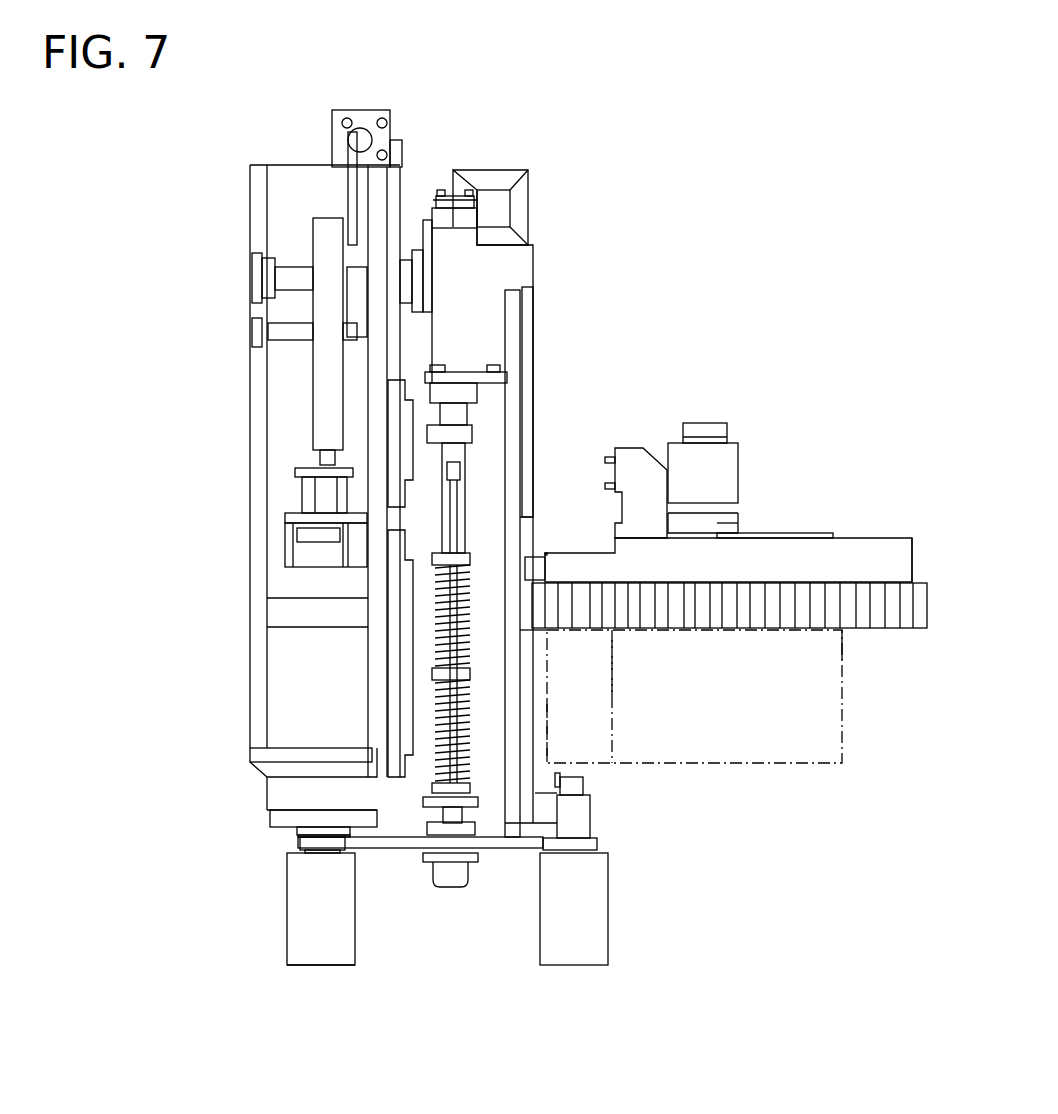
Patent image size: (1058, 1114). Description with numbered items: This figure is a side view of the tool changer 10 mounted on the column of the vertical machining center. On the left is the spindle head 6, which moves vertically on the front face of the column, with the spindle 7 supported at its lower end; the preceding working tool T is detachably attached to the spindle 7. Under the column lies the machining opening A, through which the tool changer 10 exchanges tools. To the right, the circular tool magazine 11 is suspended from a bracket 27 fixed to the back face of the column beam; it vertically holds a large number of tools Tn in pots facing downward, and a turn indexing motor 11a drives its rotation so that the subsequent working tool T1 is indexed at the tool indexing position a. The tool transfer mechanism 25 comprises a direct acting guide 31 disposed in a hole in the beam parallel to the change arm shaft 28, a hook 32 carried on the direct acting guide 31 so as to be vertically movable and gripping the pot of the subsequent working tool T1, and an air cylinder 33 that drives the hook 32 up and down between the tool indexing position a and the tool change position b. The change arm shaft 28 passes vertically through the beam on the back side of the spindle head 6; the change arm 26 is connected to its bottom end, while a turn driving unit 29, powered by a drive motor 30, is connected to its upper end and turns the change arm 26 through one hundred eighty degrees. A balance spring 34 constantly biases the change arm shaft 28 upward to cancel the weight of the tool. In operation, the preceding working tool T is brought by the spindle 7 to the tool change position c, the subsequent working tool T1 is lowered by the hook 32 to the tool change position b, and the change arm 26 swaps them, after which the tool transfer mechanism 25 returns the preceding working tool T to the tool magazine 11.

The spindle head 6 is at (235, 430).
The spindle 7 is at (298, 836).
The tool changer 10 is at (746, 352).
The tool magazine 11 is at (910, 536).
The turn indexing motor 11a is at (740, 460).
The tool transfer mechanism 25 is at (578, 398).
The change arm 26 is at (382, 850).
The bracket 27 is at (642, 455).
The change arm shaft 28 is at (462, 497).
The turn driving unit 29 is at (495, 330).
The drive motor 30 is at (530, 212).
The direct acting guide 31 is at (508, 770).
The hook 32 is at (533, 555).
The air cylinder 33 is at (535, 440).
The balance spring 34 is at (463, 640).
The machining opening A is at (445, 905).
The preceding working tool T is at (287, 905).
The subsequent working tool T1 is at (613, 735).
The tools Tn is at (843, 715).
The tool indexing position a is at (577, 637).
The tool change position b is at (570, 970).
The tool change position c is at (318, 970).